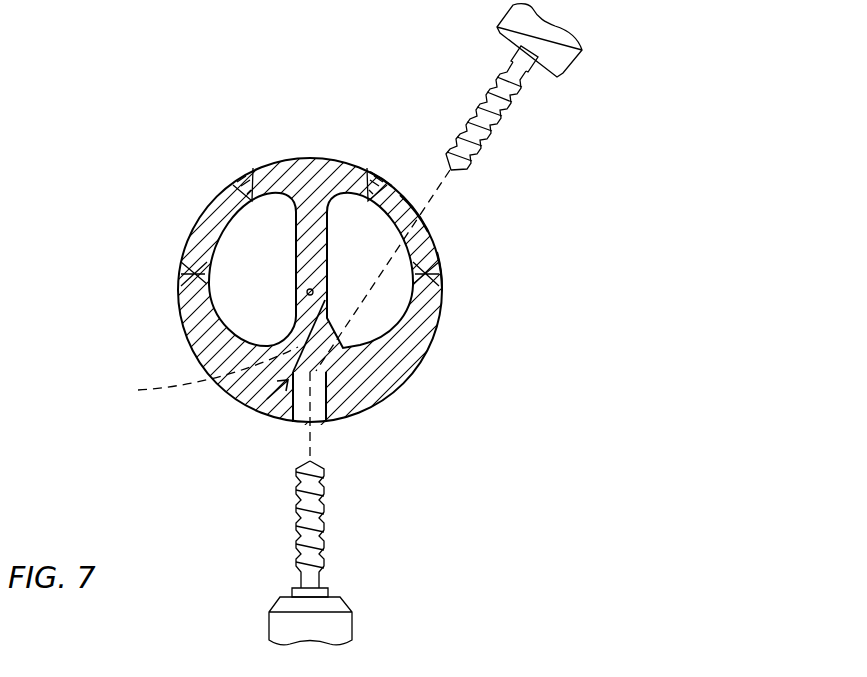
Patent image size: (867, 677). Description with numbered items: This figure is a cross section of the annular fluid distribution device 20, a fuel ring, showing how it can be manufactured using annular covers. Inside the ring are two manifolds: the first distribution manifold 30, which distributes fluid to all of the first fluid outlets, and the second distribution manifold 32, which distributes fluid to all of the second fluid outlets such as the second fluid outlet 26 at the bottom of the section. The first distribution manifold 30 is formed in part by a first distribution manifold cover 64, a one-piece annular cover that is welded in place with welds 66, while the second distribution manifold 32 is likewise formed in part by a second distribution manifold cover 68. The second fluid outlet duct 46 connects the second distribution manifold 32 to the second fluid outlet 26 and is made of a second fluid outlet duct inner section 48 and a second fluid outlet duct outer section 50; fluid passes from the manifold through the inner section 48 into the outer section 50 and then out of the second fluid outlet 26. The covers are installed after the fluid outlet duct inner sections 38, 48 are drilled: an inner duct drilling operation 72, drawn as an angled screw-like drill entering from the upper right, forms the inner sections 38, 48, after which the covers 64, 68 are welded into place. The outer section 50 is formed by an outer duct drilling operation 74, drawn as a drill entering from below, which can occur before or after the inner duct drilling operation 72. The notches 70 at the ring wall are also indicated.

The annular fluid distribution device 20 is at (322, 279).
The second fluid outlet 26 is at (322, 422).
The first distribution manifold 30 is at (243, 302).
The second distribution manifold 32 is at (383, 302).
The fluid outlet duct inner section 38 is at (201, 377).
The second fluid outlet duct 46 is at (265, 389).
The second fluid outlet duct inner section 48 is at (330, 352).
The second fluid outlet duct outer section 50 is at (315, 389).
The first distribution manifold cover 64 is at (208, 219).
The welds 66 is at (236, 183).
The second distribution manifold cover 68 is at (421, 240).
The notches 70 is at (386, 180).
The inner duct drilling operation 72 is at (485, 95).
The outer duct drilling operation 74 is at (320, 512).